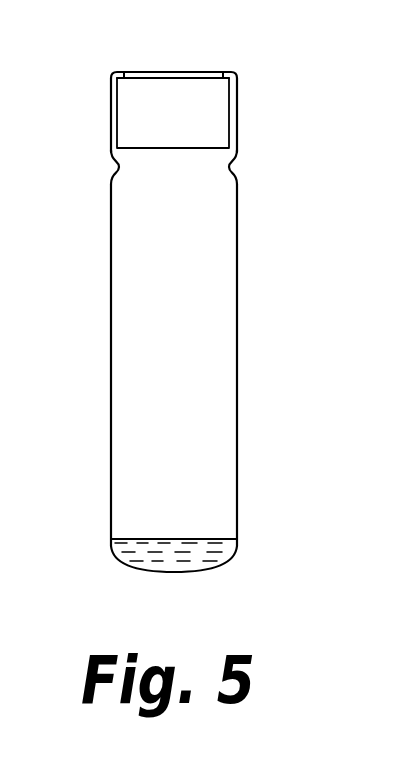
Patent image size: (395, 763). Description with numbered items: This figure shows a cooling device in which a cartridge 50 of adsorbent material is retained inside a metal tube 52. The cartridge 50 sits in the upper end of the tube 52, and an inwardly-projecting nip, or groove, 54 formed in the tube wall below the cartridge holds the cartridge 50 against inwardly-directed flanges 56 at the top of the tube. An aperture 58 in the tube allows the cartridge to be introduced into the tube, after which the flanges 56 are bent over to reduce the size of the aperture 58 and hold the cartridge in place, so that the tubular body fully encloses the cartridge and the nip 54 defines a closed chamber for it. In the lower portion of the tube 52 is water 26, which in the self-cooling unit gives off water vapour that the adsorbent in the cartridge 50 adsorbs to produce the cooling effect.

The water 26 is at (208, 553).
The cartridge 50 is at (203, 128).
The metal tube 52 is at (238, 363).
The nip 54 is at (226, 164).
The inwardly-directed flanges 56 is at (117, 72).
The aperture 58 is at (160, 73).